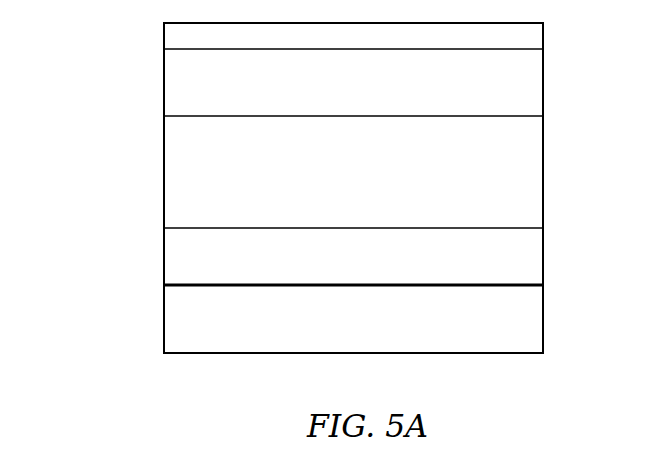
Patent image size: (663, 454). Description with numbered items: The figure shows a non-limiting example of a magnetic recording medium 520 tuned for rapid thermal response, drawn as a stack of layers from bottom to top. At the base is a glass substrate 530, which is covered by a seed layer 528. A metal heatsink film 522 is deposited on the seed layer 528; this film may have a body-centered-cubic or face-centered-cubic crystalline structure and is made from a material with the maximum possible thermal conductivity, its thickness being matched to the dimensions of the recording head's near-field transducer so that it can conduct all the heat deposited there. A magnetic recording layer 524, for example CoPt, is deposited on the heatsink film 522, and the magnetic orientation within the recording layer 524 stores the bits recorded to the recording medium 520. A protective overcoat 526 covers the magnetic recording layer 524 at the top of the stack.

The recording medium 520 is at (107, 70).
The protective overcoat 526 is at (538, 35).
The magnetic recording layer 524 is at (535, 90).
The heatsink film 522 is at (533, 182).
The seed layer 528 is at (533, 258).
The glass substrate 530 is at (538, 320).